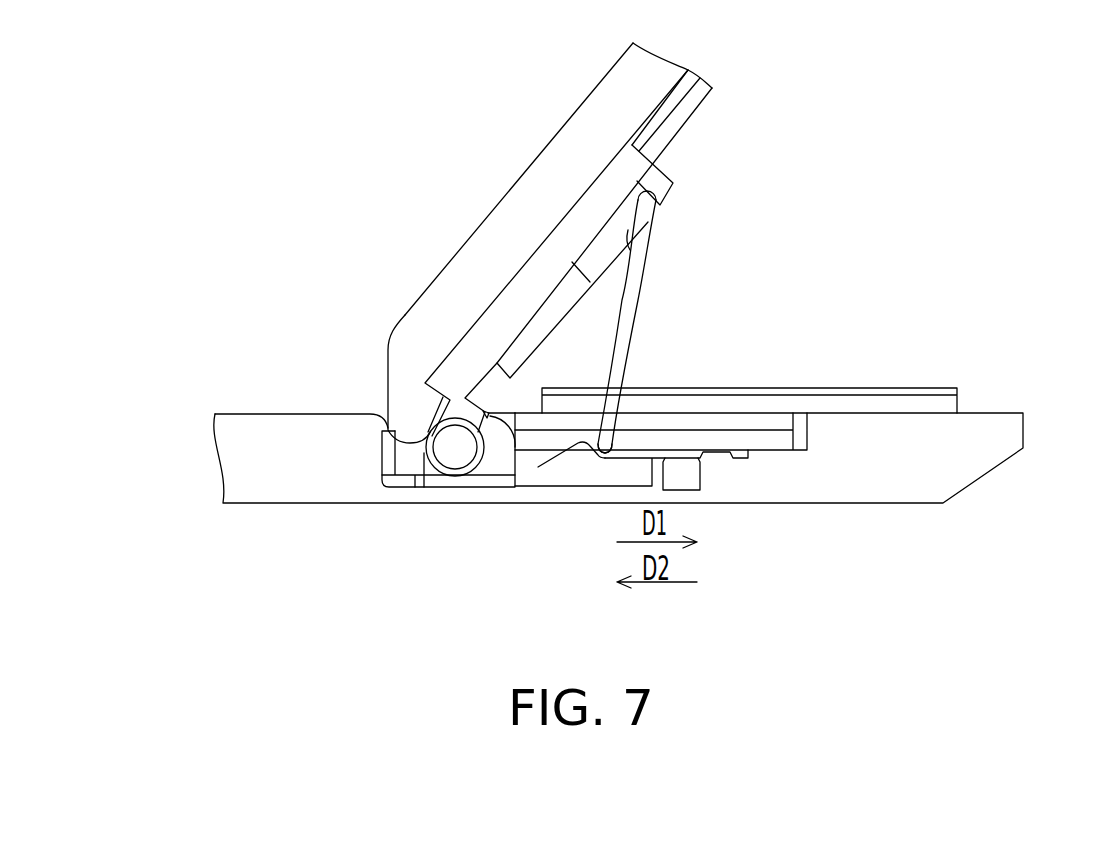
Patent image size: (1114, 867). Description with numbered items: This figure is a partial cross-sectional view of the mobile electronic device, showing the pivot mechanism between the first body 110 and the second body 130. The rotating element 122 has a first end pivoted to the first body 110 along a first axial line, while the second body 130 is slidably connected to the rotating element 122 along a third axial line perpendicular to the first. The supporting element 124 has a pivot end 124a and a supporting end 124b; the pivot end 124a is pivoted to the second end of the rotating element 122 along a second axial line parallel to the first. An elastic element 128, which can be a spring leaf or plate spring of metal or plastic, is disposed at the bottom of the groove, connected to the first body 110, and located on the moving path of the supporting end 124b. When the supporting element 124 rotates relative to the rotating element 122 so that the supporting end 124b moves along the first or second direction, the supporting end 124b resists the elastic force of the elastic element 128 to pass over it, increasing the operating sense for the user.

The first body 110 is at (952, 468).
The rotating element 122 is at (542, 265).
The supporting element 124 is at (640, 302).
The pivot end 124a is at (662, 227).
The supporting end 124b is at (620, 433).
The elastic element 128 is at (553, 467).
The second body 130 is at (605, 98).